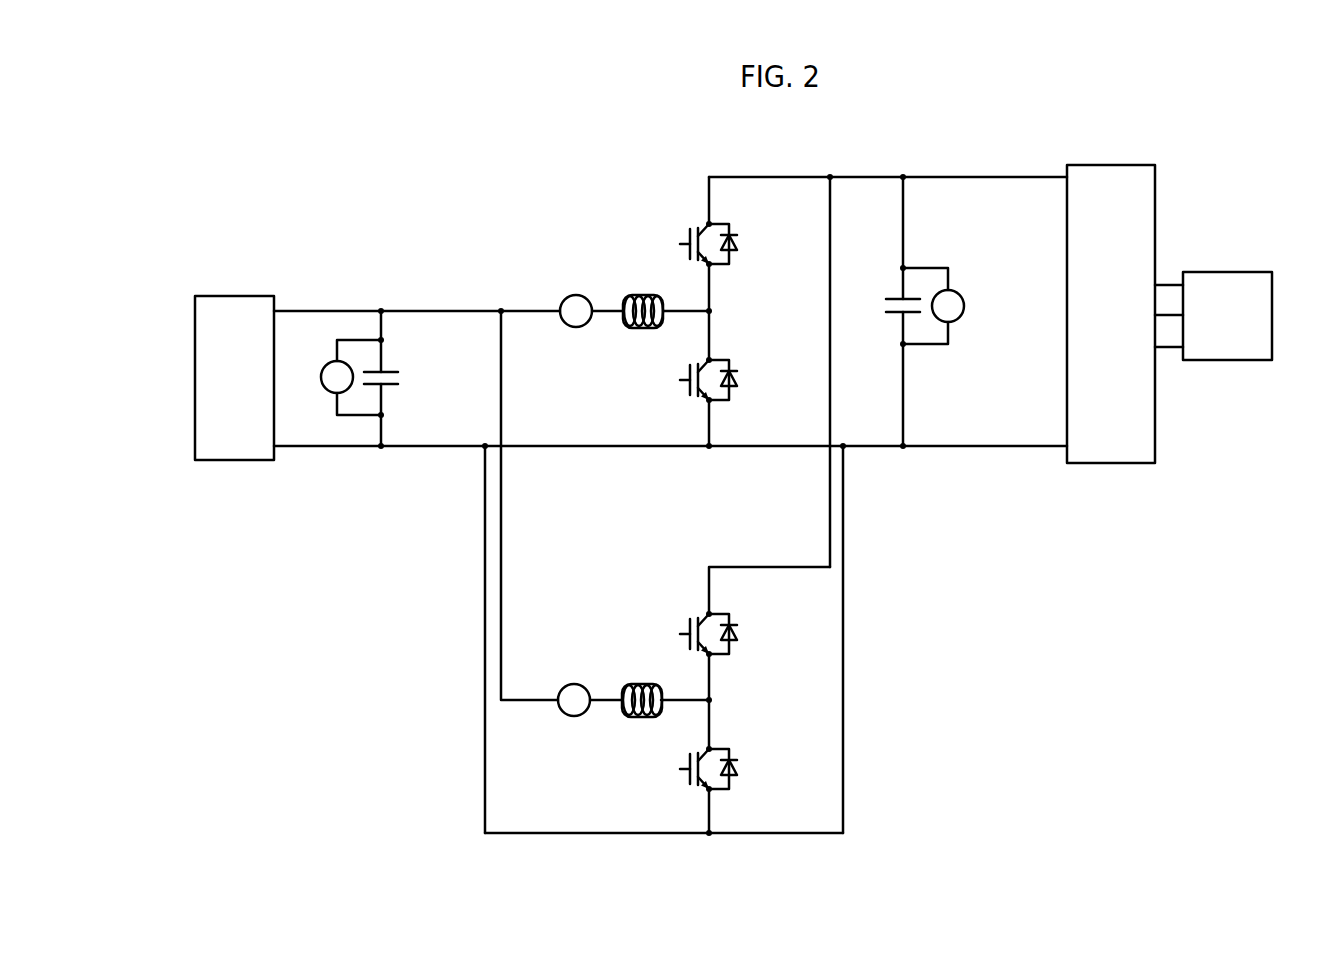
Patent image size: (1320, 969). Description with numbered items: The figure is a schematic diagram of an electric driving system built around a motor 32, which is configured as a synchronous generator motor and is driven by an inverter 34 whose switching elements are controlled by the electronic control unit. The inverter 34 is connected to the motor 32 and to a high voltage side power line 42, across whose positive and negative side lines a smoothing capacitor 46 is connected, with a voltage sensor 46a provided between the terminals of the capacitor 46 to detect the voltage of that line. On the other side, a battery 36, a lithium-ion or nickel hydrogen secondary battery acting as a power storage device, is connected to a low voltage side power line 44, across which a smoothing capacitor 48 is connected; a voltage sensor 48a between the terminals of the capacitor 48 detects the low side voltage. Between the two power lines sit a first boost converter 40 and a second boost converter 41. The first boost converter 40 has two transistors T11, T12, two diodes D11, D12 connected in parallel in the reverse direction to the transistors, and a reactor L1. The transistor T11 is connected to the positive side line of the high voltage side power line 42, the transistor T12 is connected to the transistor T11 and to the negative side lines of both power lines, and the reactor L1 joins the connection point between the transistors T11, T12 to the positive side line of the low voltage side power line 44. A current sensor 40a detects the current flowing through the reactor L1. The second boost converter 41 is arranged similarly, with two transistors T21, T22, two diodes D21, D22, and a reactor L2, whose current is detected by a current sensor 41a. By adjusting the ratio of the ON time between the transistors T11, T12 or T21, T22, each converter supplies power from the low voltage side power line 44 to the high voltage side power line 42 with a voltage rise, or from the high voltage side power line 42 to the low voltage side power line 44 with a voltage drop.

The motor 32 is at (1228, 272).
The inverter 34 is at (1107, 165).
The battery 36 is at (231, 296).
The first boost converter 40 is at (592, 208).
The current sensor 40a is at (573, 295).
The second boost converter 41 is at (590, 594).
The current sensor 41a is at (572, 684).
The high voltage side power line 42 is at (1023, 178).
The low voltage side power line 44 is at (440, 313).
The smoothing capacitor 46 is at (898, 297).
The voltage sensor 46a is at (952, 290).
The smoothing capacitor 48 is at (388, 371).
The voltage sensor 48a is at (333, 361).
The reactor L1 is at (640, 295).
The reactor L2 is at (638, 684).
The transistor T11 is at (685, 243).
The transistor T12 is at (685, 379).
The transistor T21 is at (685, 633).
The transistor T22 is at (685, 768).
The diode D11 is at (738, 246).
The diode D12 is at (738, 382).
The diode D21 is at (738, 636).
The diode D22 is at (738, 771).